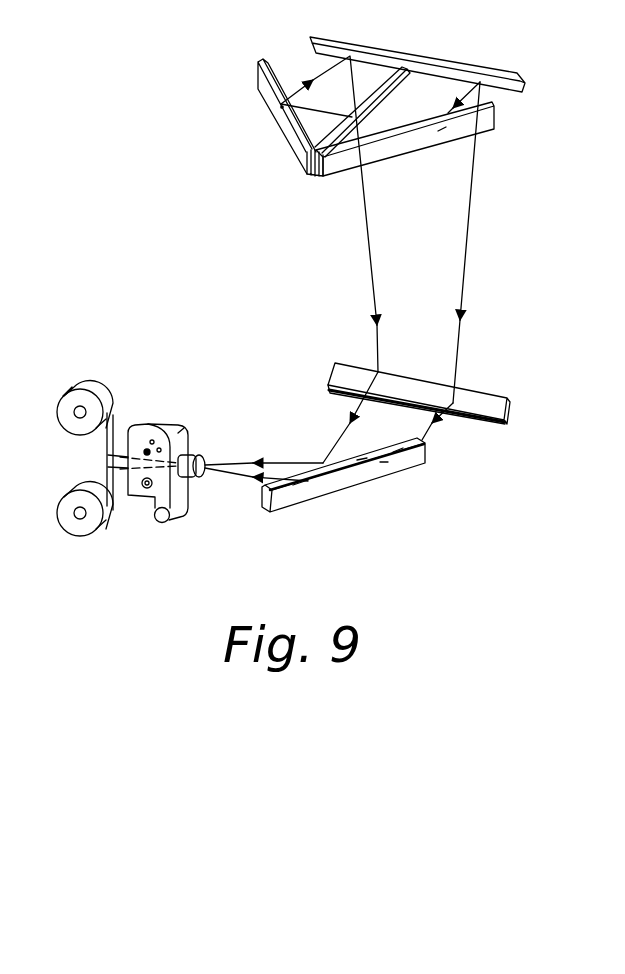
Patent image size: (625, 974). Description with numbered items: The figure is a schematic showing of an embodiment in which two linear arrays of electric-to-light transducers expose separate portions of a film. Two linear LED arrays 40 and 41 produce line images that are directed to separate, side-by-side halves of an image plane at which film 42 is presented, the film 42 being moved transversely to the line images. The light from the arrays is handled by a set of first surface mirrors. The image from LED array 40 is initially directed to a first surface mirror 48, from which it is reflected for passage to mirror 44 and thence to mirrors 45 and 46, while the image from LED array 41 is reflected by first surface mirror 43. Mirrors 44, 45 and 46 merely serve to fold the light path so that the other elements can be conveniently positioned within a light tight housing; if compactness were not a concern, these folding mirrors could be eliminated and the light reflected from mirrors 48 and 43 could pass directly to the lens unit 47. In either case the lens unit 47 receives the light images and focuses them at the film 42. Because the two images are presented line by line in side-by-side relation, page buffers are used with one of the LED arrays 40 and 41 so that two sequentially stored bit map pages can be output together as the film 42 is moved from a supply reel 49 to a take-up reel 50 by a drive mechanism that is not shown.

The linear LED array 40 is at (362, 122).
The linear LED array 41 is at (350, 115).
The film 42 is at (117, 508).
The first surface mirror 43 is at (265, 62).
The mirror 44 is at (361, 46).
The mirror 45 is at (422, 380).
The mirror 46 is at (327, 493).
The lens unit 47 is at (173, 520).
The first surface mirror 48 is at (383, 150).
The supply reel 49 is at (109, 393).
The take-up reel 50 is at (76, 538).